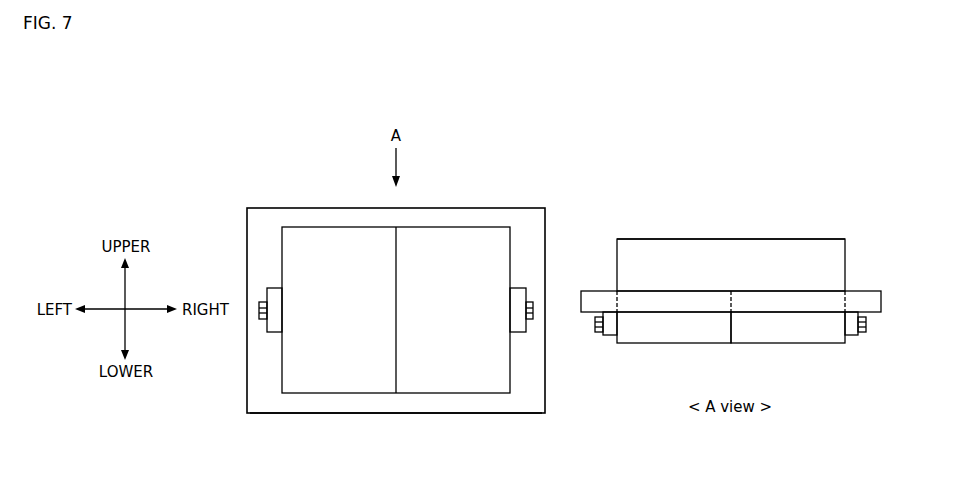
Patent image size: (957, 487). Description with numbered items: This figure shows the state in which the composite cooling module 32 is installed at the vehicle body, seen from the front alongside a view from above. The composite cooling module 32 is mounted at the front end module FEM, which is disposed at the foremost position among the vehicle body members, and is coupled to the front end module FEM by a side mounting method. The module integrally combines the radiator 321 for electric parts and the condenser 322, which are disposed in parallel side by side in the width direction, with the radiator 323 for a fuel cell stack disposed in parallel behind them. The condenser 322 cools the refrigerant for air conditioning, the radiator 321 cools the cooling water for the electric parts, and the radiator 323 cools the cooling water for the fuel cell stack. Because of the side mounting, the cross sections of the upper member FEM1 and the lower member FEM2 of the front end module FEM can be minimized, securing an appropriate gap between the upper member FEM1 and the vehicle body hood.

The composite cooling module 32 is at (418, 218).
The radiator for electric parts 321 is at (332, 232).
The condenser 322 is at (460, 232).
The radiator for a fuel cell stack 323 is at (767, 247).
The front end module FEM is at (550, 207).
The upper member FEM1 is at (490, 215).
The lower member FEM2 is at (486, 402).